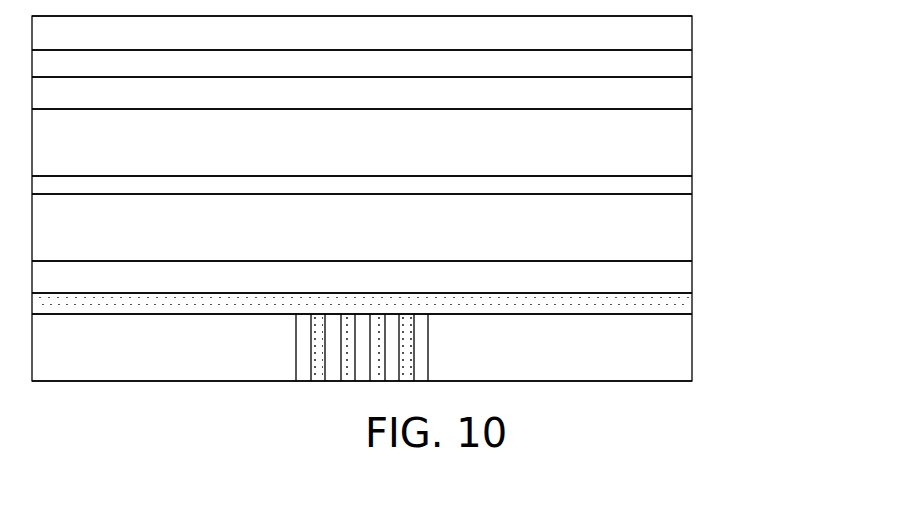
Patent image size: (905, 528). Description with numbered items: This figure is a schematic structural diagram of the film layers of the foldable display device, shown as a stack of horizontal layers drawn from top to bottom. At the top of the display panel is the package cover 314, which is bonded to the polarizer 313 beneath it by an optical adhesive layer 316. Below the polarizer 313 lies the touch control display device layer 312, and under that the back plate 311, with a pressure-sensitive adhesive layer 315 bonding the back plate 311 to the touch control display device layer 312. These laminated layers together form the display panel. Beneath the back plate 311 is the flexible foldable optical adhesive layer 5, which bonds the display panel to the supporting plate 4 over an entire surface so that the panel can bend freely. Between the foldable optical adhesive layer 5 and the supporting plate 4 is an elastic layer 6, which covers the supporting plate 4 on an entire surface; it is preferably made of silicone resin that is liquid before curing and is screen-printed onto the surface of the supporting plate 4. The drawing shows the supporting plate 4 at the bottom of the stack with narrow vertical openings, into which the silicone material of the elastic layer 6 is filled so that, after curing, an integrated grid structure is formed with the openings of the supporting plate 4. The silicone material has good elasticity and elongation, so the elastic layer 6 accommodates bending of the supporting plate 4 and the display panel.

The package cover 314 is at (681, 25).
The optical adhesive layer 316 is at (681, 55).
The polarizer 313 is at (681, 88).
The touch control display device layer 312 is at (681, 138).
The pressure-sensitive adhesive layer 315 is at (681, 180).
The back plate 311 is at (681, 223).
The flexible foldable optical adhesive layer 5 is at (681, 272).
The elastic layer 6 is at (681, 305).
The supporting plate 4 is at (681, 347).